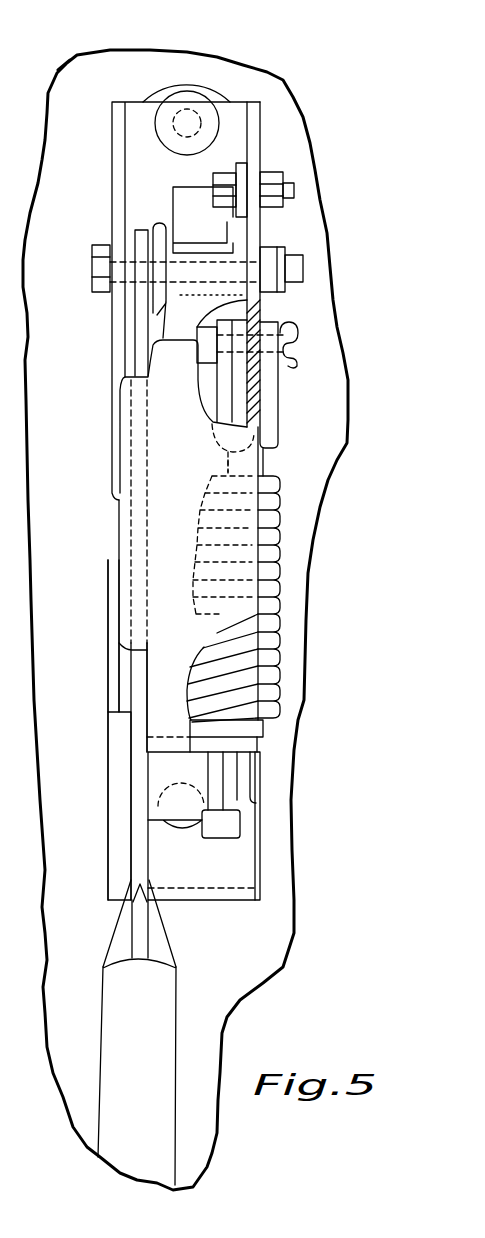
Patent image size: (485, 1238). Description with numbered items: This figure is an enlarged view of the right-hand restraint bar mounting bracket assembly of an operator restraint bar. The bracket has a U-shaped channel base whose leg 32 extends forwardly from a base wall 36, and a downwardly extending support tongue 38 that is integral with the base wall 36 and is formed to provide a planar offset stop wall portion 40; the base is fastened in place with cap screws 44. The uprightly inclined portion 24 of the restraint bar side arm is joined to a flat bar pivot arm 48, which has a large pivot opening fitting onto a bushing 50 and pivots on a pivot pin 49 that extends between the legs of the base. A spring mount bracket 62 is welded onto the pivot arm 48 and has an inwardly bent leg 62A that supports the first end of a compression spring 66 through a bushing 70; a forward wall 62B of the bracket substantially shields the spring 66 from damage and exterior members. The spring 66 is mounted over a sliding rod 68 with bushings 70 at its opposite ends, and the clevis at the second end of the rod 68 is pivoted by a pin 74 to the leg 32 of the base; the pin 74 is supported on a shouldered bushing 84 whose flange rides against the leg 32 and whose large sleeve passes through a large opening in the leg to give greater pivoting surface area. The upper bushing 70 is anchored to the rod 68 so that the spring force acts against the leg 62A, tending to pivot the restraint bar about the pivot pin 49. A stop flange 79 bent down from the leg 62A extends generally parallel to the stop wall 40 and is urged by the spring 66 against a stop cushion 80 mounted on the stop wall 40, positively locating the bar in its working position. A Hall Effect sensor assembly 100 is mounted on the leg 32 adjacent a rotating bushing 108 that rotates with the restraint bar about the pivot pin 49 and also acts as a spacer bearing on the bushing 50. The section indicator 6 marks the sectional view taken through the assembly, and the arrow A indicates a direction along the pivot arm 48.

The section line 6- 6 is at (165, 190).
The uprightly inclined portion 24 is at (160, 993).
The leg 32 is at (263, 118).
The base wall 36 is at (140, 113).
The support tongue 38 is at (117, 680).
The offset stop wall portion 40 is at (118, 817).
The cap screw 44 is at (183, 102).
The pivot arm 48 is at (137, 857).
The pivot pin 49 is at (100, 268).
The bushing 50 is at (157, 300).
The spring mount bracket 62 is at (167, 553).
The inwardly bent leg 62A is at (167, 752).
The forward wall 62B is at (170, 622).
The compression spring 66 is at (279, 588).
The sliding rod 68 is at (223, 797).
The bushing 70 is at (277, 398).
The pin 74 is at (198, 378).
The stop flange 79 is at (245, 775).
The stop cushion 80 is at (183, 828).
The shouldered bushing 84 is at (288, 320).
The Hall Effect sensor assembly 100 is at (200, 237).
The rotating bushing 108 is at (160, 230).
The direction arrow A is at (142, 906).